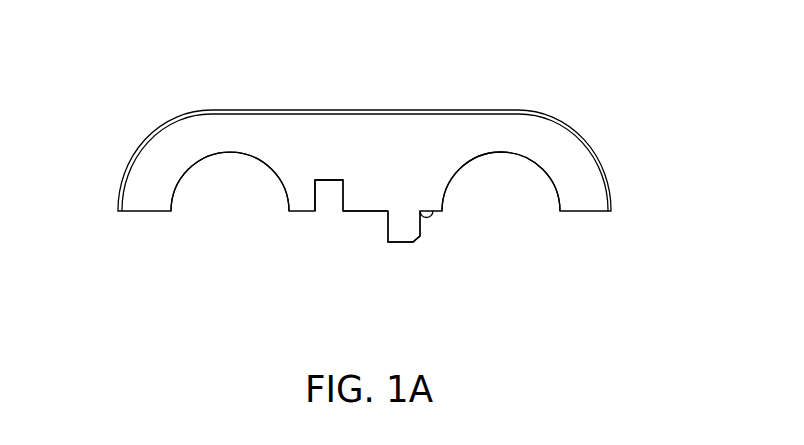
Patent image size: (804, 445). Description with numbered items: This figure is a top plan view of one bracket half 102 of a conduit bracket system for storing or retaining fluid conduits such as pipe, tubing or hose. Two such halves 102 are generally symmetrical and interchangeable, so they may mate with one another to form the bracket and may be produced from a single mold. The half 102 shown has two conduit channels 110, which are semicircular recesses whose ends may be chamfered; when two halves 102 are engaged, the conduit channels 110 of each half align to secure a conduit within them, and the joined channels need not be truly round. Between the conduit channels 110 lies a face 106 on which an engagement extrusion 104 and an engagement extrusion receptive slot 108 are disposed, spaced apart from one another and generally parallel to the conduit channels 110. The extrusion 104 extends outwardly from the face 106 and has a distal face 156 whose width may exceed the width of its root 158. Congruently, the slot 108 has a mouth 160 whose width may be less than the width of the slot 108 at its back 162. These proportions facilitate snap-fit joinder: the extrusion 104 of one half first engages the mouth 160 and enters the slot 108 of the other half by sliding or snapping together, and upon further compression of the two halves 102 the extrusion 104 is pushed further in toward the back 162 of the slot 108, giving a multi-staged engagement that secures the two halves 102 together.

The half 102 is at (614, 109).
The engagement extrusion 104 is at (405, 253).
The face 106 is at (370, 248).
The engagement extrusion receptive slot 108 is at (328, 213).
The conduit channel 110 is at (215, 207).
The distal face 156 is at (417, 243).
The root 158 is at (428, 220).
The mouth 160 is at (314, 214).
The back 162 is at (312, 178).